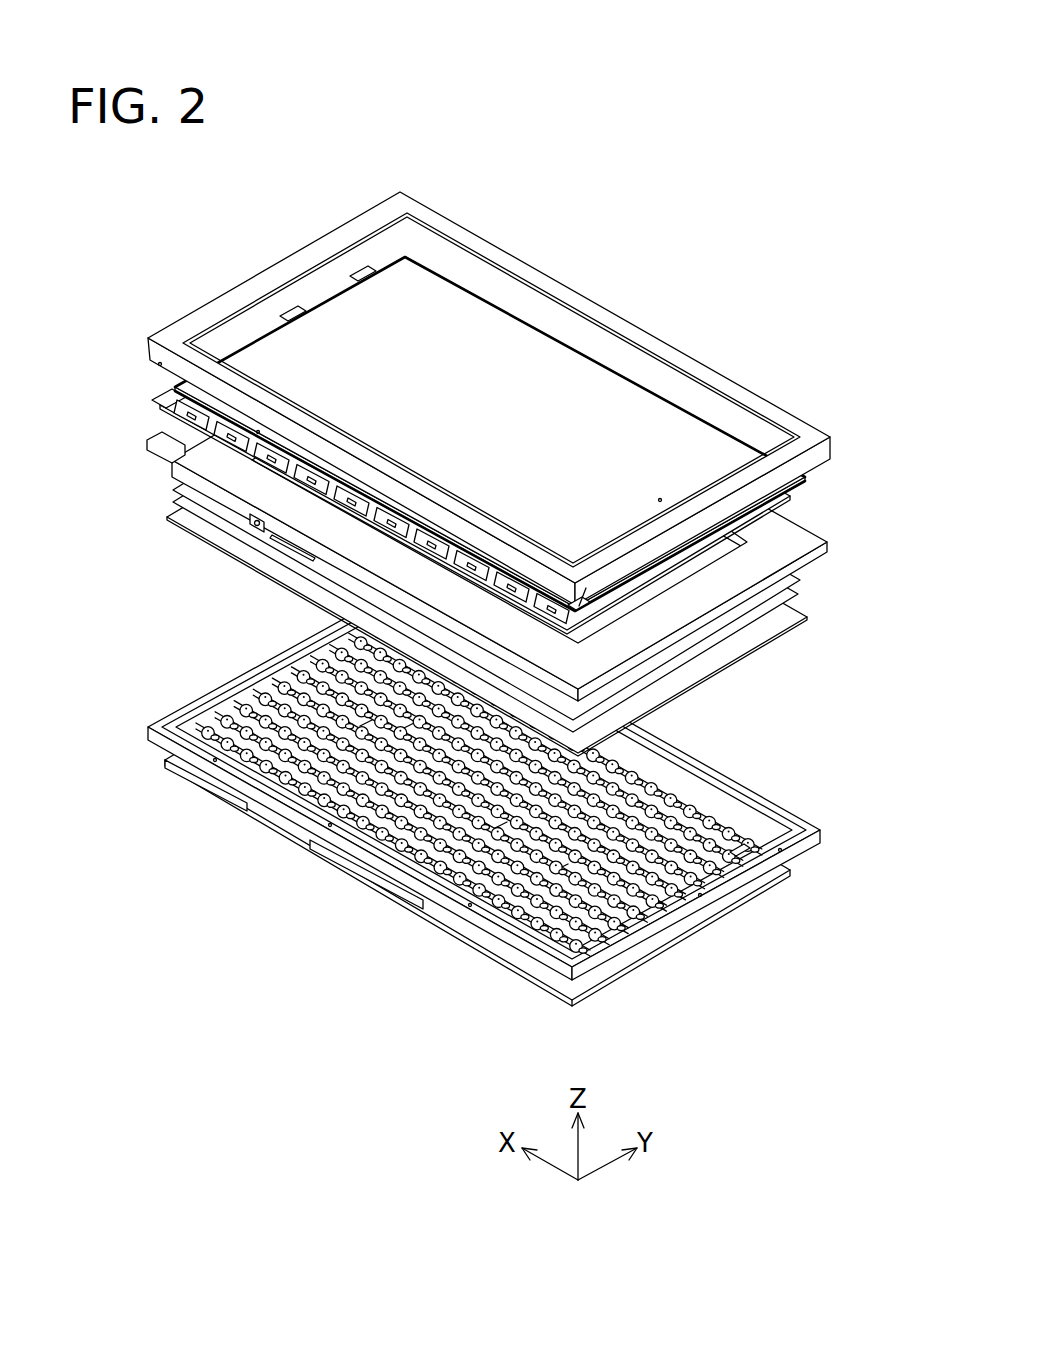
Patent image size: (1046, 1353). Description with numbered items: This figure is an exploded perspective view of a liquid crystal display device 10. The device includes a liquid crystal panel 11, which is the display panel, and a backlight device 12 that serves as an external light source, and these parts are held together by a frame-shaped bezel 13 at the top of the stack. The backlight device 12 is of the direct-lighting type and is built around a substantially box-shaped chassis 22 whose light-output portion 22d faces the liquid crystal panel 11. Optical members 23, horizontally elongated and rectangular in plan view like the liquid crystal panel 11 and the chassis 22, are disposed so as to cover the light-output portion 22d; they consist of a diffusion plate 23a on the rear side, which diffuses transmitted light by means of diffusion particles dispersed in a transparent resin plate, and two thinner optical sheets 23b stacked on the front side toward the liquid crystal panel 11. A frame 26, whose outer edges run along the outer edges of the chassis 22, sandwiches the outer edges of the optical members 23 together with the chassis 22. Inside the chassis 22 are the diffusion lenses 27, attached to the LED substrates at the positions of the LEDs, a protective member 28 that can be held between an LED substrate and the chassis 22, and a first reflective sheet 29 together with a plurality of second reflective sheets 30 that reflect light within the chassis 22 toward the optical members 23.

The liquid crystal display device 10 is at (627, 257).
The liquid crystal panel 11 is at (643, 398).
The backlight device 12 is at (285, 967).
The bezel 13 is at (513, 256).
The chassis 22 is at (273, 810).
The light-output portion 22d is at (617, 892).
The optical members 23 is at (538, 553).
The diffusion plate 23a is at (800, 615).
The optical sheets 23b is at (792, 586).
The frame 26 is at (813, 533).
The diffusion lenses 27 is at (273, 773).
The protective member 28 is at (365, 718).
The first reflective sheet 29 is at (737, 847).
The second reflective sheets 30 is at (337, 692).